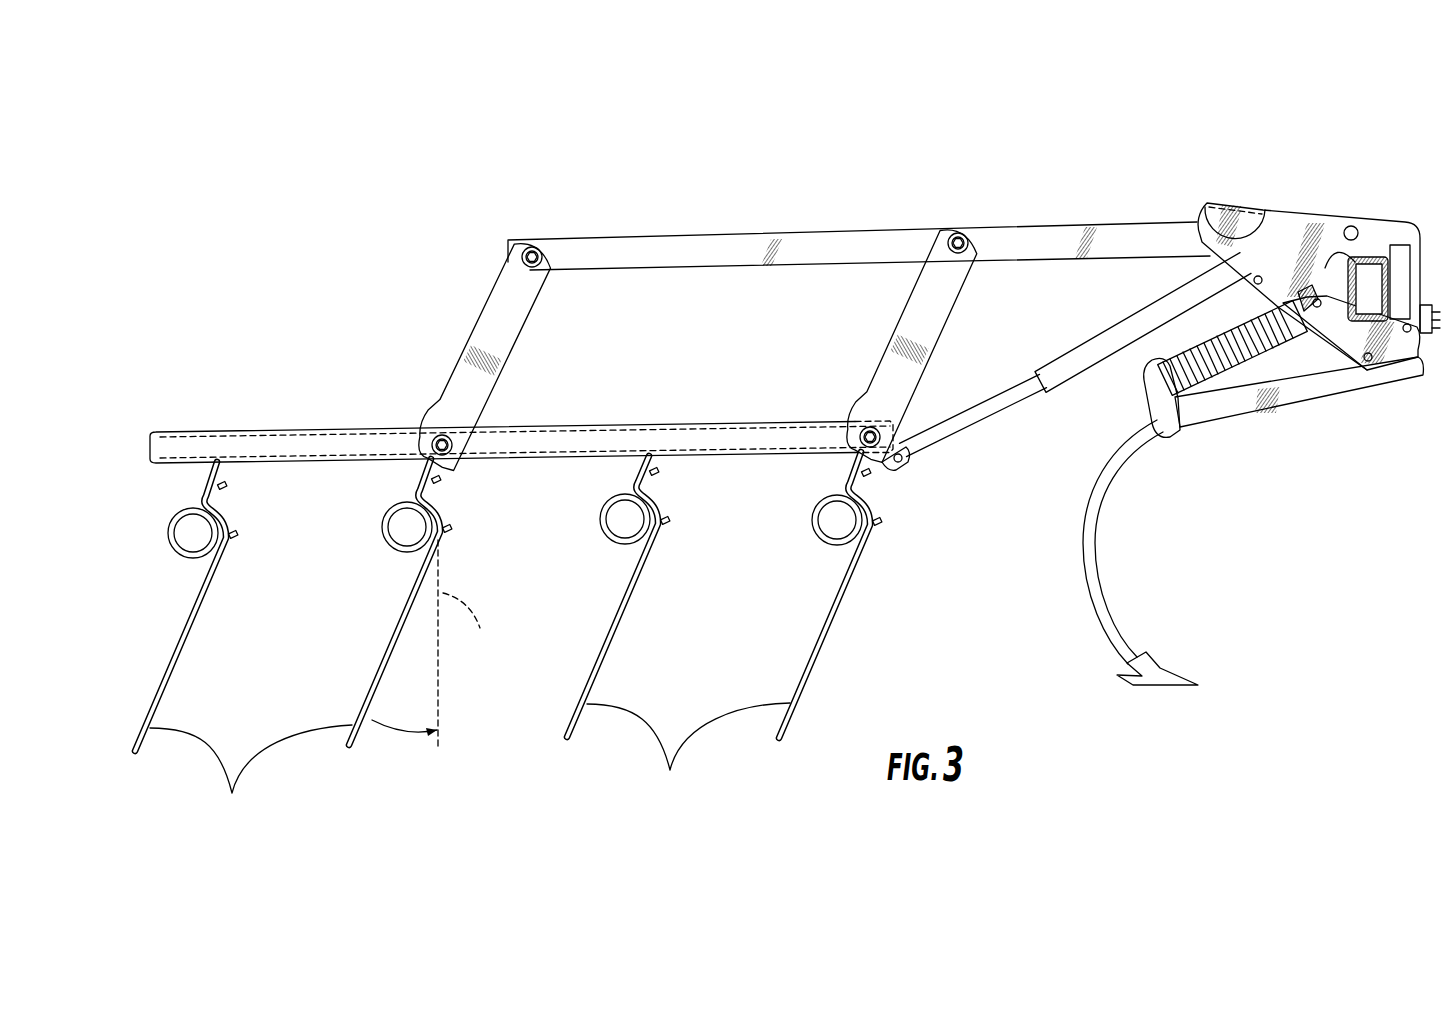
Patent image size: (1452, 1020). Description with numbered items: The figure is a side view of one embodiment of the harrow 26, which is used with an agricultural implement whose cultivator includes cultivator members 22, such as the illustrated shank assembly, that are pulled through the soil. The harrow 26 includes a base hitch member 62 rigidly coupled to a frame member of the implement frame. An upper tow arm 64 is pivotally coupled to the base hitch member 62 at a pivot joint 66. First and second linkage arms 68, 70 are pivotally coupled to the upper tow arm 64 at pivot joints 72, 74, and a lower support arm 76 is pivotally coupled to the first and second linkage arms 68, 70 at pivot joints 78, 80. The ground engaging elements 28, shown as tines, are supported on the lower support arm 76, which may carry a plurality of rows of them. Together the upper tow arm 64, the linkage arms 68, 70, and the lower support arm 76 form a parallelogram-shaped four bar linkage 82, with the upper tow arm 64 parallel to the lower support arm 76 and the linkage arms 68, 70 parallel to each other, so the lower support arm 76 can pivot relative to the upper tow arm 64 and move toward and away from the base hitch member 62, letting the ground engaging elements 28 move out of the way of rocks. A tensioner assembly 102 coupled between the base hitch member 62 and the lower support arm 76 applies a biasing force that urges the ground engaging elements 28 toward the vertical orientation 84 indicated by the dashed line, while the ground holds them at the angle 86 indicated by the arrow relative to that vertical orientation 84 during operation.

The cultivator member 22 is at (1080, 601).
The harrow 26 is at (361, 140).
The ground engaging elements 28 is at (508, 640).
The base hitch member 62 is at (1300, 212).
The upper tow arm 64 is at (720, 236).
The pivot joint 66 is at (1358, 231).
The first linkage arm 68 is at (905, 320).
The second linkage arm 70 is at (492, 323).
The pivot joint 72 is at (960, 232).
The pivot joint 74 is at (532, 246).
The lower support arm 76 is at (322, 428).
The pivot joint 78 is at (860, 432).
The pivot joint 80 is at (434, 438).
The four bar linkage 82 is at (872, 129).
The vertical orientation 84 is at (463, 644).
The angle 86 is at (374, 724).
The tensioner assembly 102 is at (1102, 315).